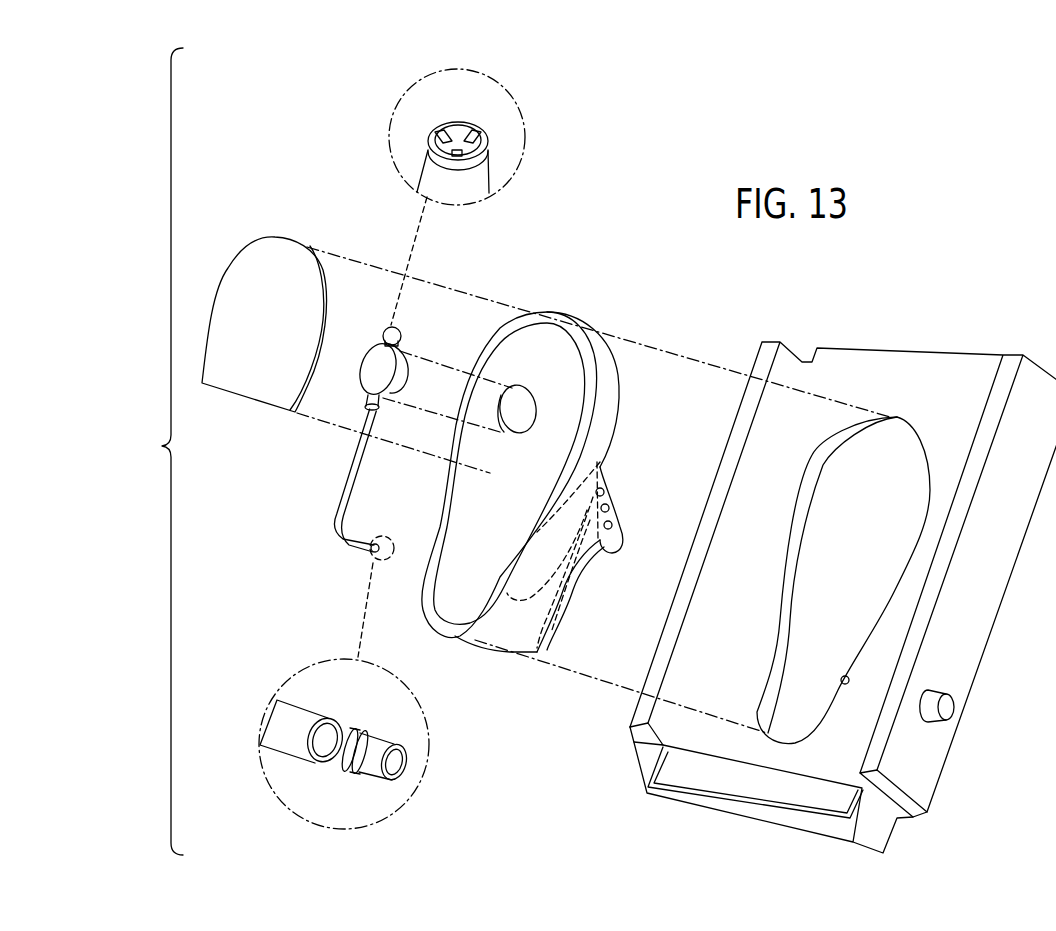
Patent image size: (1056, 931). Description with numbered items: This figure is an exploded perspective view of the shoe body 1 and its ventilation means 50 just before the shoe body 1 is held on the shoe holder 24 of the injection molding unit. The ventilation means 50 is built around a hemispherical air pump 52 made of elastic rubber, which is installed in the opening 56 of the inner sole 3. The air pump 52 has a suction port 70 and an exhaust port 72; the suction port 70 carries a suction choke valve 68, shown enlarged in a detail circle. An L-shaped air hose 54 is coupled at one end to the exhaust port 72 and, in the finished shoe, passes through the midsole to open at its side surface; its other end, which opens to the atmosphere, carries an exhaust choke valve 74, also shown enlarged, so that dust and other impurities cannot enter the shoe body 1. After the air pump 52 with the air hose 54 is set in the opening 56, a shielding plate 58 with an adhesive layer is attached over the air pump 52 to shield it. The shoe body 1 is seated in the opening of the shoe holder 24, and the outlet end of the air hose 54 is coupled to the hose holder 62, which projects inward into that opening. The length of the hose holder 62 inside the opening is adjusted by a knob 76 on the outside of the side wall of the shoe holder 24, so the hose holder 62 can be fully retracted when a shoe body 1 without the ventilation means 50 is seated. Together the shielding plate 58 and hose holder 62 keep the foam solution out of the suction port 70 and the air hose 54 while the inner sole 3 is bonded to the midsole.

The shoe body 1 is at (510, 637).
The inner sole 3 is at (564, 411).
The shoe holder 24 is at (960, 747).
The ventilation means 50 is at (357, 388).
The air pump 52 is at (410, 370).
The air hose 54 is at (343, 483).
The opening 56 is at (520, 395).
The shielding plate 58 is at (287, 253).
The hose holder 62 is at (845, 680).
The suction choke valve 68 is at (427, 140).
The suction port 70 is at (472, 178).
The exhaust port 72 is at (379, 400).
The exhaust choke valve 74 is at (370, 767).
The knob 76 is at (950, 710).